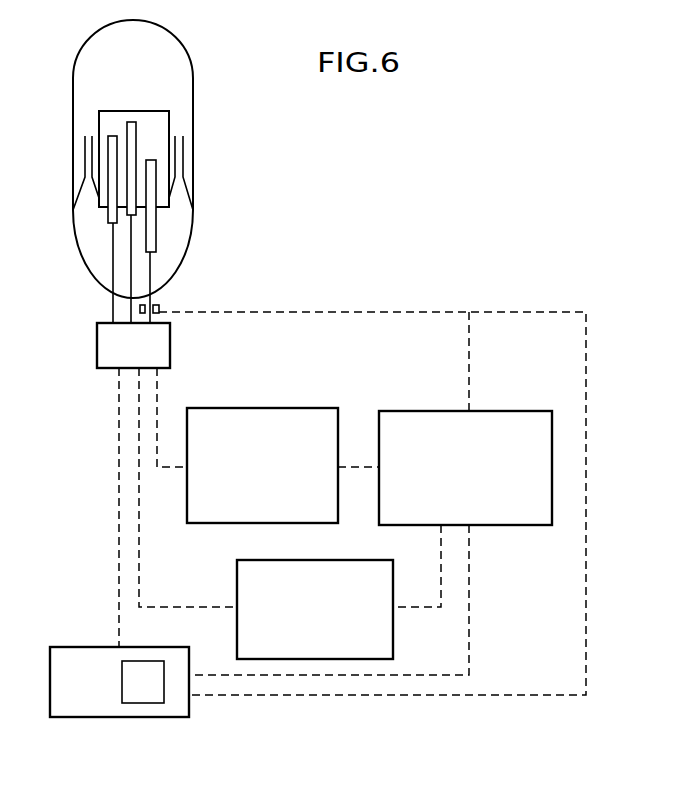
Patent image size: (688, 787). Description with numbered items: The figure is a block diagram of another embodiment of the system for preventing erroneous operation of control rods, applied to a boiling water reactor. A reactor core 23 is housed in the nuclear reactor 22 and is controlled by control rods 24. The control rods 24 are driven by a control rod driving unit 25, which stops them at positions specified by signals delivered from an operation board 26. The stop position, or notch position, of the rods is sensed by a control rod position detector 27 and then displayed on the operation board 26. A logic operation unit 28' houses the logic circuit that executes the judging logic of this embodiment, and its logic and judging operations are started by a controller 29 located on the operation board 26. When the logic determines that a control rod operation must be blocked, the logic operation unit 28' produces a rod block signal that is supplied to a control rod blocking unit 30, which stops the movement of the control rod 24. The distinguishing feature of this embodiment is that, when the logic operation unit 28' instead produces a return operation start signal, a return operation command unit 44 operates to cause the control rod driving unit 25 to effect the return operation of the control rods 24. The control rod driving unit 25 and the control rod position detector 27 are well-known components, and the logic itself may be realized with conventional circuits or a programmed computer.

The nuclear reactor 22 is at (192, 90).
The reactor core 23 is at (118, 111).
The control rods 24 is at (156, 231).
The control rod driving unit 25 is at (97, 352).
The operation board 26 is at (87, 647).
The control rod position detector 27 is at (161, 306).
The logic operation unit 28' is at (465, 453).
The controller 29 is at (147, 703).
The control rod blocking unit 30 is at (291, 408).
The return operation command unit 44 is at (393, 628).